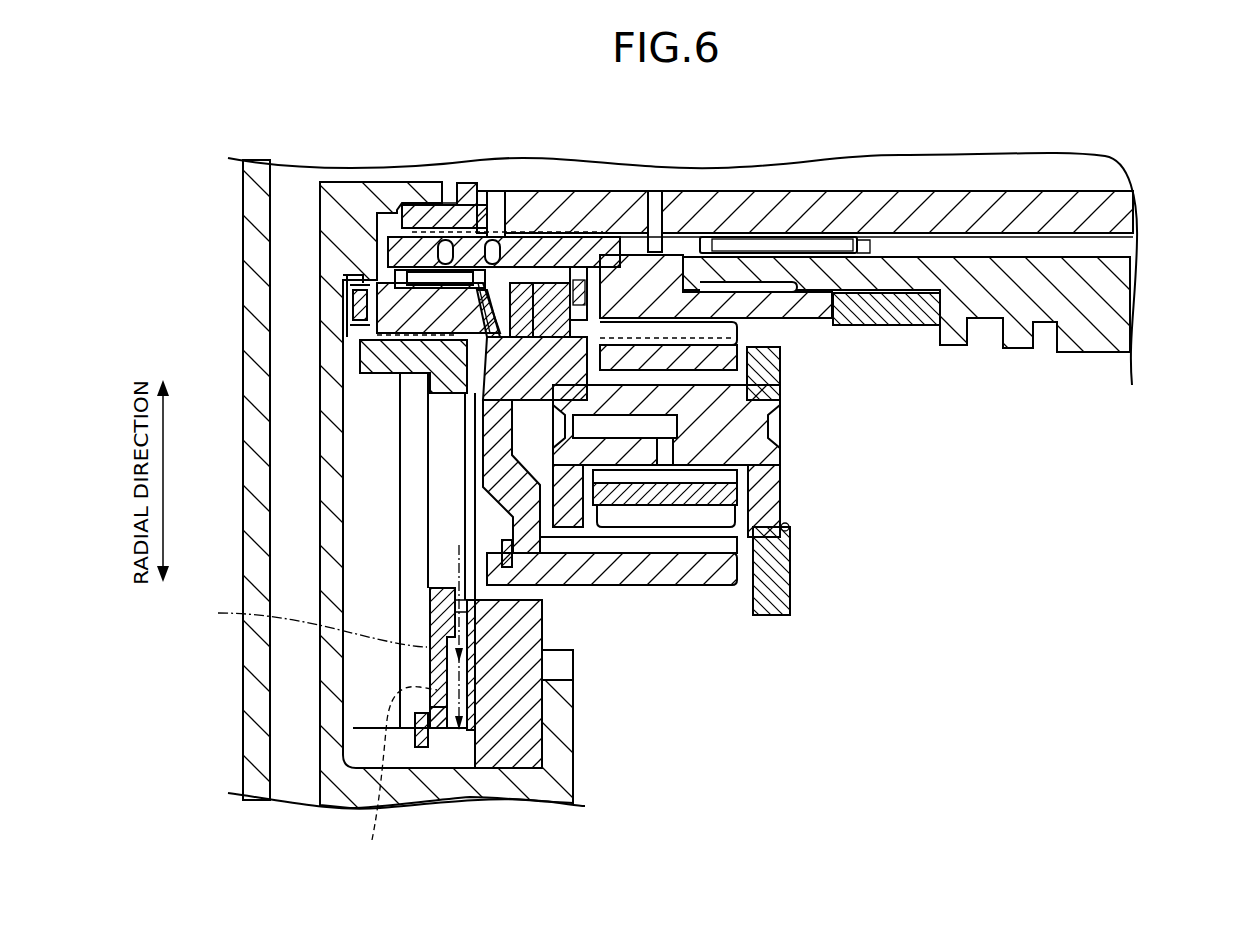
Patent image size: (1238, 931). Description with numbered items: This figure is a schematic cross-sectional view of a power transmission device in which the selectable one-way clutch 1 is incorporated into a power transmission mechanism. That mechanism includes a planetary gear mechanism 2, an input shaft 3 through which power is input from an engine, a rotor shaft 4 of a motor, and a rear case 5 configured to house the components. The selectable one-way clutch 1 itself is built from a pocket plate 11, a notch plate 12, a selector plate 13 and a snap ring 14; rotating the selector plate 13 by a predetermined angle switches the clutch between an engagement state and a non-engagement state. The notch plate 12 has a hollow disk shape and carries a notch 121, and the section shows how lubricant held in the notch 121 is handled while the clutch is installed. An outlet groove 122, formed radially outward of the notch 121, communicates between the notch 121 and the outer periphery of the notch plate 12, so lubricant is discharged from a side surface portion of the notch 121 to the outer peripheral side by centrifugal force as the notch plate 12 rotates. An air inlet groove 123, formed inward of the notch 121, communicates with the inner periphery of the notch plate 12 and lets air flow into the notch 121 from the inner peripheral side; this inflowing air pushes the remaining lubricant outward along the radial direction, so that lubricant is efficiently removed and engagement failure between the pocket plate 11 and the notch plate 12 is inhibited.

The selectable one-way clutch 1 is at (467, 528).
The pocket plate 11 is at (577, 663).
The notch plate 12 is at (442, 578).
The notch 121 is at (473, 648).
The outlet groove 122 is at (437, 723).
The air inlet groove 123 is at (457, 608).
The selector plate 13 is at (473, 707).
The snap ring 14 is at (420, 748).
The planetary gear mechanism 2 is at (801, 395).
The input shaft 3 is at (1123, 220).
The rotor shaft 4 is at (1118, 297).
The rear case 5 is at (245, 460).